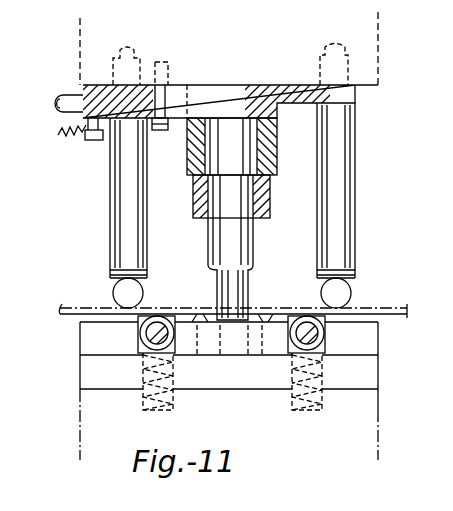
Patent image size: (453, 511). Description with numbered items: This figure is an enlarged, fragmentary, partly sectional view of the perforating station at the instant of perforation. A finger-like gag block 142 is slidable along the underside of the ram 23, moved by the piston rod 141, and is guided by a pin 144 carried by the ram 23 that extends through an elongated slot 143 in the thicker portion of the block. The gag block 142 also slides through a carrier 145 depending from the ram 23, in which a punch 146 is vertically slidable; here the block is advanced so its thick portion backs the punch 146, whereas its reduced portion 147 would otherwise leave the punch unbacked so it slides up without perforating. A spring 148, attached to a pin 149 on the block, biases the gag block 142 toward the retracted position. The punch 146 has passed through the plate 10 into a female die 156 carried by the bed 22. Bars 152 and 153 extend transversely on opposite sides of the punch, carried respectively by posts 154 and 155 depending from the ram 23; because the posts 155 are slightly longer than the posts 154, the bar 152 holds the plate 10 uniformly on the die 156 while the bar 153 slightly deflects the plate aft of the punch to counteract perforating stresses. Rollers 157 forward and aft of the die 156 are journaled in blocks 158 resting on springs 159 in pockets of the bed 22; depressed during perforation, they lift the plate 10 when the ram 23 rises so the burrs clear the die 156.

The plate 10 is at (380, 308).
The bed 22 is at (378, 427).
The ram 23 is at (378, 38).
The piston rod 141 is at (65, 95).
The gag block 142 is at (130, 120).
The elongated slot 143 is at (235, 85).
The pin 144 is at (165, 62).
The carrier 145 is at (278, 142).
The punch 146 is at (250, 240).
The reduced portion 147 is at (355, 97).
The spring 148 is at (68, 143).
The pin 149 is at (95, 141).
The bar 152 is at (115, 292).
The bar 153 is at (352, 290).
The post 154 is at (140, 240).
The post 155 is at (348, 240).
The female die 156 is at (258, 322).
The roller 157 is at (138, 346).
The block 158 is at (140, 333).
The spring 159 is at (148, 411).